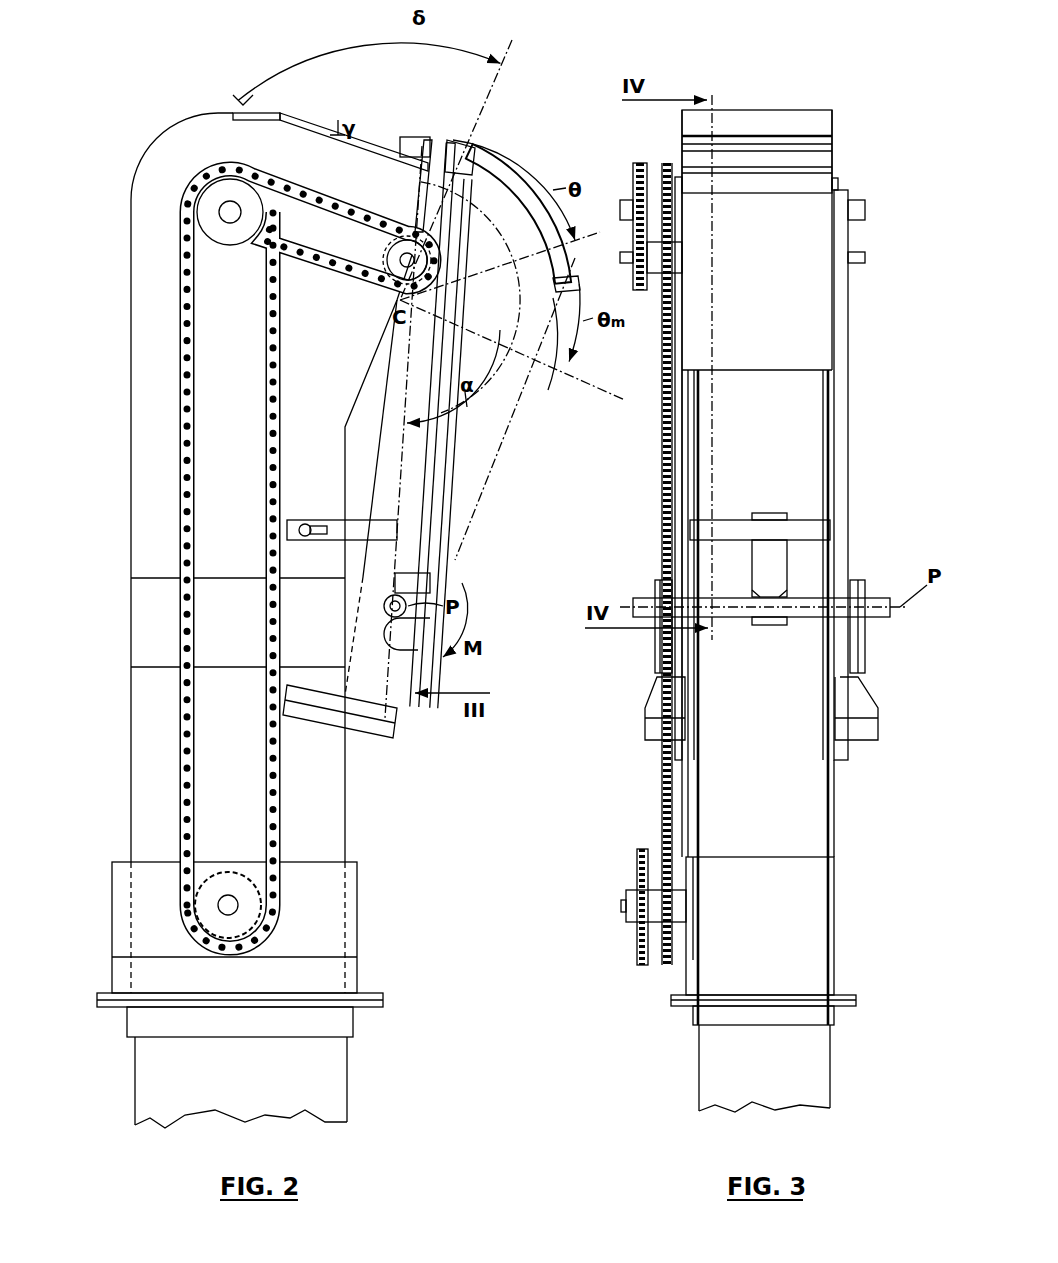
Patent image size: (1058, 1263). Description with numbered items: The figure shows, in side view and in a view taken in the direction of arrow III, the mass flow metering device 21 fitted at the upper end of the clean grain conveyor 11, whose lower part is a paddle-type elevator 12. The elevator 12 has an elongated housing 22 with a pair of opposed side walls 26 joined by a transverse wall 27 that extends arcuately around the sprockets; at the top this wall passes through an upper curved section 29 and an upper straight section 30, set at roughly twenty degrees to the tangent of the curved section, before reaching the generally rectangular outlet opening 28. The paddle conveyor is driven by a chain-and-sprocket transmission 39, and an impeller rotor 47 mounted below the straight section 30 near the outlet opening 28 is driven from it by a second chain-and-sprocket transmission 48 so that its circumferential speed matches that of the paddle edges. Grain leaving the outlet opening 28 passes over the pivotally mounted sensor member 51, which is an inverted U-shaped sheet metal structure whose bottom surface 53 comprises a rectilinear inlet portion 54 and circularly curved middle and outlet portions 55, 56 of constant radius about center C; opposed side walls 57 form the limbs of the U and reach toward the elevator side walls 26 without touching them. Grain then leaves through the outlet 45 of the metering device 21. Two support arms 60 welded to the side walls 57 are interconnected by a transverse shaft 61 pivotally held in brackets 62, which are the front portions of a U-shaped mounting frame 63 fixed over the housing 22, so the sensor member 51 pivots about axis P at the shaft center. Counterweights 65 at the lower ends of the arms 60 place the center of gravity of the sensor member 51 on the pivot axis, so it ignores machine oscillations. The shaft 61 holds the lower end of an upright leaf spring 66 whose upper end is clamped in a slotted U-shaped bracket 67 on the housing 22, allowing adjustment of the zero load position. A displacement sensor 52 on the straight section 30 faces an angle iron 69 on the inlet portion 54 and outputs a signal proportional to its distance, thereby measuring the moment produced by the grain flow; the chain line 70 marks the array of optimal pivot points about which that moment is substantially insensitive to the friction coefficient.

In FIG. 2, the clean grain conveyor 11 is at (110, 205).
In FIG. 3, the clean grain conveyor 11 is at (641, 987).
In FIG. 2, the paddle-type elevator 12 is at (155, 445).
In FIG. 3, the paddle-type elevator 12 is at (811, 937).
In FIG. 2, the mass flow metering device 21 is at (530, 165).
In FIG. 3, the mass flow metering device 21 is at (868, 280).
In FIG. 2, the elevator housing 22 is at (150, 327).
In FIG. 3, the elevator housing 22 is at (813, 836).
In FIG. 2, the side walls 26 is at (162, 733).
In FIG. 3, the side walls 26 is at (871, 792).
In FIG. 2, the transverse wall 27 is at (131, 823).
In FIG. 3, the transverse wall 27 is at (763, 963).
In FIG. 2, the outlet opening 28 is at (428, 193).
In FIG. 2, the upper curved section 29 is at (157, 143).
In FIG. 2, the upper straight section 30 is at (360, 140).
In FIG. 3, the upper straight section 30 is at (832, 125).
In FIG. 2, the chain-and-sprocket transmission 39 is at (182, 553).
In FIG. 3, the chain-and-sprocket transmission 39 is at (662, 470).
In FIG. 2, the outlet 45 is at (530, 378).
In FIG. 3, the outlet 45 is at (753, 380).
In FIG. 2, the impeller rotor 47 is at (382, 290).
In FIG. 2, the second chain-and-sprocket transmission 48 is at (327, 270).
In FIG. 3, the second chain-and-sprocket transmission 48 is at (633, 173).
In FIG. 2, the sensor member 51 is at (480, 335).
In FIG. 3, the sensor member 51 is at (815, 300).
In FIG. 2, the sensor 52 is at (434, 137).
In FIG. 3, the sensor 52 is at (758, 140).
In FIG. 2, the bottom surface 53 is at (537, 373).
In FIG. 3, the bottom surface 53 is at (751, 303).
In FIG. 2, the inlet portion 54 is at (473, 145).
In FIG. 3, the inlet portion 54 is at (832, 175).
In FIG. 2, the middle portion 55 is at (575, 279).
In FIG. 3, the middle portion 55 is at (761, 246).
In FIG. 2, the outlet portion 56 is at (557, 367).
In FIG. 3, the outlet portion 56 is at (792, 358).
In FIG. 2, the side walls 57 is at (470, 297).
In FIG. 3, the side walls 57 is at (678, 348).
In FIG. 2, the support arms 60 is at (422, 497).
In FIG. 3, the support arms 60 is at (680, 497).
In FIG. 2, the transverse shaft 61 is at (383, 606).
In FIG. 3, the transverse shaft 61 is at (795, 612).
In FIG. 2, the brackets 62 is at (432, 580).
In FIG. 3, the brackets 62 is at (655, 655).
In FIG. 2, the mounting frame 63 is at (148, 640).
In FIG. 2, the counterweights 65 is at (388, 723).
In FIG. 3, the counterweights 65 is at (652, 730).
In FIG. 2, the leaf spring 66 is at (395, 563).
In FIG. 3, the leaf spring 66 is at (770, 572).
In FIG. 2, the U-shaped bracket 67 is at (335, 520).
In FIG. 3, the U-shaped bracket 67 is at (817, 537).
In FIG. 2, the angle iron 69 is at (458, 140).
In FIG. 3, the angle iron 69 is at (828, 160).
In FIG. 2, the chain line 70 is at (480, 448).